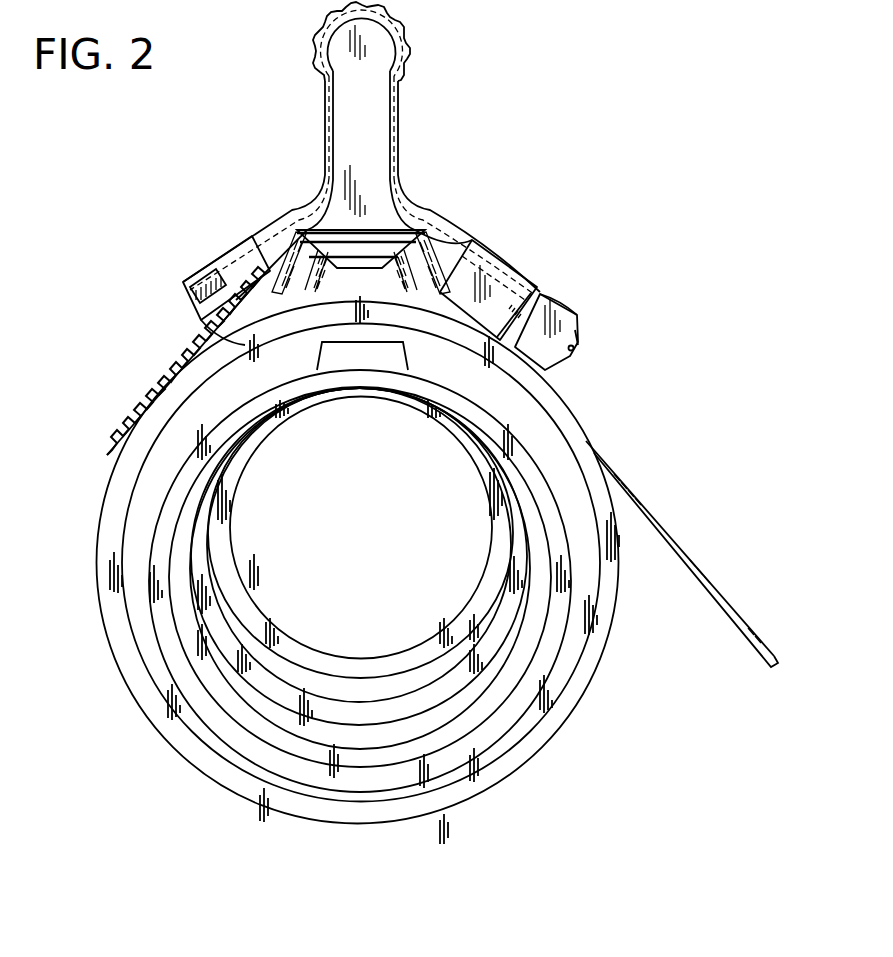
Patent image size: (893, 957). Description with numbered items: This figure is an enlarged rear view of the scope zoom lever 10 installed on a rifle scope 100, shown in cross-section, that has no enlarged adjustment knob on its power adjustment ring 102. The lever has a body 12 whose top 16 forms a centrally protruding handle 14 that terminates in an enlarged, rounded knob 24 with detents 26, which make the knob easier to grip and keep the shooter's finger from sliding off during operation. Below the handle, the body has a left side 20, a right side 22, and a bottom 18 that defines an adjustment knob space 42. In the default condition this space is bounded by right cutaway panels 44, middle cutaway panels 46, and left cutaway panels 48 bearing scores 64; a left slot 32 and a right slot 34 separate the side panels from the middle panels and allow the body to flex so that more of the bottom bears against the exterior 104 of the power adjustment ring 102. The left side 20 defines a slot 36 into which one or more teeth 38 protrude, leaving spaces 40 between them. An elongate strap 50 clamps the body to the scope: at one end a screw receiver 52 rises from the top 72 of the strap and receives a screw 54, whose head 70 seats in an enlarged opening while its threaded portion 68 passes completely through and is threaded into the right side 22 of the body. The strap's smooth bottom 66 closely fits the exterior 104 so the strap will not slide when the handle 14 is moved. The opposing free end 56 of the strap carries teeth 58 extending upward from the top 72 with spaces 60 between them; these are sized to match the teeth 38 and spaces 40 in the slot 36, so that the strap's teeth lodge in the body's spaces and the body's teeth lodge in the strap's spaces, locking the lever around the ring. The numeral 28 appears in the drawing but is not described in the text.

The scope zoom lever 10 is at (395, 124).
The body 12 is at (386, 244).
The handle 14 is at (399, 112).
The top 16 is at (305, 222).
The bottom 18 is at (225, 345).
The left side 20 is at (178, 251).
The right side 22 is at (512, 278).
The knob 24 is at (410, 50).
The detents 26 is at (386, 17).
The handle opening 28 is at (358, 87).
The left slot 32 is at (298, 228).
The right slot 34 is at (420, 232).
The slot 36 is at (256, 270).
The teeth 38 is at (243, 298).
The spaces 40 is at (200, 268).
The adjustment knob space 42 is at (368, 287).
The right cutaway panels 44 is at (433, 270).
The middle cutaway panels 46 is at (365, 248).
The left cutaway panels 48 is at (297, 286).
The strap 50 is at (682, 551).
The screw receiver 52 is at (590, 323).
The screw 54 is at (575, 345).
The free end 56 is at (266, 272).
The teeth 58 is at (167, 364).
The spaces 60 is at (180, 365).
The scores 64 is at (507, 266).
The bottom 66 is at (727, 617).
The threaded portion 68 is at (547, 297).
The head 70 is at (580, 333).
The top 72 is at (697, 562).
The rifle scope 100 is at (592, 699).
The power adjustment ring 102 is at (622, 553).
The exterior 104 is at (620, 610).